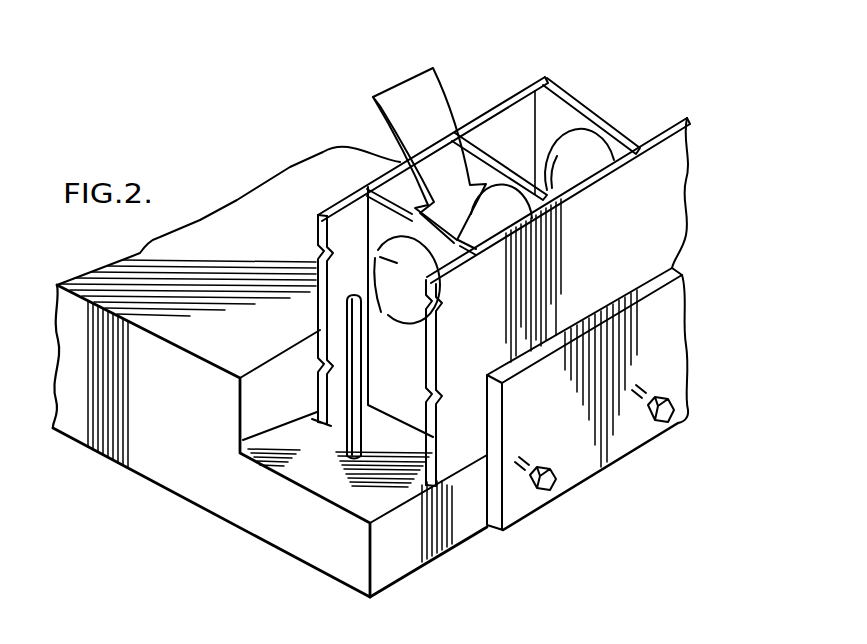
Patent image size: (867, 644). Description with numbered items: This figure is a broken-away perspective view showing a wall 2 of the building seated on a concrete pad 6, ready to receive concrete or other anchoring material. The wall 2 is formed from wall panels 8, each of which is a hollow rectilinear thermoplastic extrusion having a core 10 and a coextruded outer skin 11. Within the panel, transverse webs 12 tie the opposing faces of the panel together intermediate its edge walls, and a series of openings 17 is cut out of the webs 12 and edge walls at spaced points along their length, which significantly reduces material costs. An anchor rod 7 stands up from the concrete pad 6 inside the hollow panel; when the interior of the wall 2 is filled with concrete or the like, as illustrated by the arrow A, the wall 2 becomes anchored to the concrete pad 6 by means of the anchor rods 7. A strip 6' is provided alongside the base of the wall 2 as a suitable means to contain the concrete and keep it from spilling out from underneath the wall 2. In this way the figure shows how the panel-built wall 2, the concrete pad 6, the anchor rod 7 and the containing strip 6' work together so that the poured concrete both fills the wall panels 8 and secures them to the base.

The wall 2 is at (650, 224).
The concrete pad 6 is at (270, 372).
The strip 6' is at (617, 399).
The anchor rod 7 is at (345, 446).
The wall panel 8 is at (616, 257).
The core 10 is at (235, 436).
The outer skin 11 is at (503, 107).
The transverse web 12 is at (575, 100).
The opening 17 is at (377, 258).
The arrow A is at (397, 85).